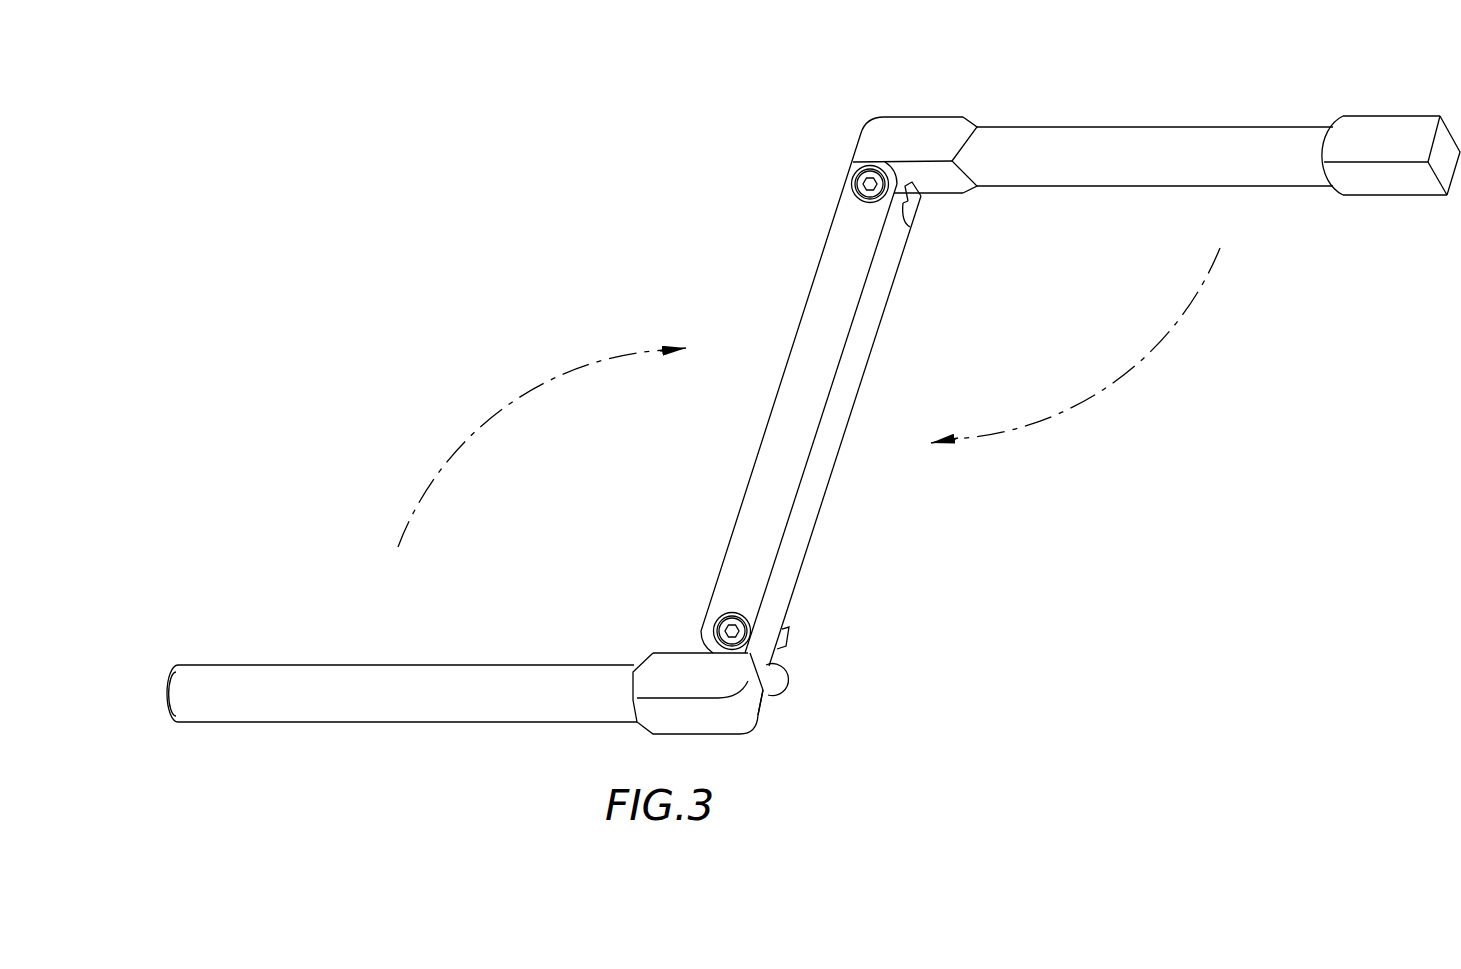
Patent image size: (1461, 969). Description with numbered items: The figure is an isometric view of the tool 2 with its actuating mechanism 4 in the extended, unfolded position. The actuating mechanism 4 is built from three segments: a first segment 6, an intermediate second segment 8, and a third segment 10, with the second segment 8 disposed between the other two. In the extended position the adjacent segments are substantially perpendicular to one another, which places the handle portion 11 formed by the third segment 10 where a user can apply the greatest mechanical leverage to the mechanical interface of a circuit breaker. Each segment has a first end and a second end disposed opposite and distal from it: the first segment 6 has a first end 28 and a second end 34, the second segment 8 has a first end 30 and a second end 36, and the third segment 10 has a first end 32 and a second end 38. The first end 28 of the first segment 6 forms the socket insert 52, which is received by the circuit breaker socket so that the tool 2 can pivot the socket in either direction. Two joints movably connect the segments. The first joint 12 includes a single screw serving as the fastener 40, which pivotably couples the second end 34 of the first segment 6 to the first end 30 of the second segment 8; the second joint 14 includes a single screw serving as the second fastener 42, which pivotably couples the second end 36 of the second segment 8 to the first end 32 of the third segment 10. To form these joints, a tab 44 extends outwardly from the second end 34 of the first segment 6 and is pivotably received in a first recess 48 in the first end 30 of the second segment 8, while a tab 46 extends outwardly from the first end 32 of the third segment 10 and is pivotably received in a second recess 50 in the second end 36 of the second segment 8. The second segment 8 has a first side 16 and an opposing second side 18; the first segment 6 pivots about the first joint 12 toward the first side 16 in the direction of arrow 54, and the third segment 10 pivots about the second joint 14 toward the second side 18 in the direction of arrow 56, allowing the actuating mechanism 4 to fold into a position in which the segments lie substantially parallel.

The tool 2 is at (935, 726).
The actuating mechanism 4 is at (837, 391).
The first segment 6 is at (1188, 141).
The second segment 8 is at (832, 385).
The third segment 10 is at (384, 760).
The handle portion 11 is at (540, 738).
The first joint 12 is at (925, 228).
The second joint 14 is at (788, 703).
The first side 16 is at (875, 320).
The second side 18 is at (788, 365).
The first end 28 is at (1440, 205).
The first end 30 is at (898, 146).
The first end 32 is at (753, 741).
The second end 34 is at (921, 116).
The second end 36 is at (747, 658).
The second end 38 is at (172, 727).
The fastener 40 is at (855, 178).
The second fastener 42 is at (733, 613).
The tab 44 is at (918, 203).
The tab 46 is at (780, 644).
The first recess 48 is at (903, 222).
The second recess 50 is at (745, 678).
The socket insert 52 is at (1391, 179).
The arrow 54 is at (1110, 386).
The arrow 56 is at (524, 393).